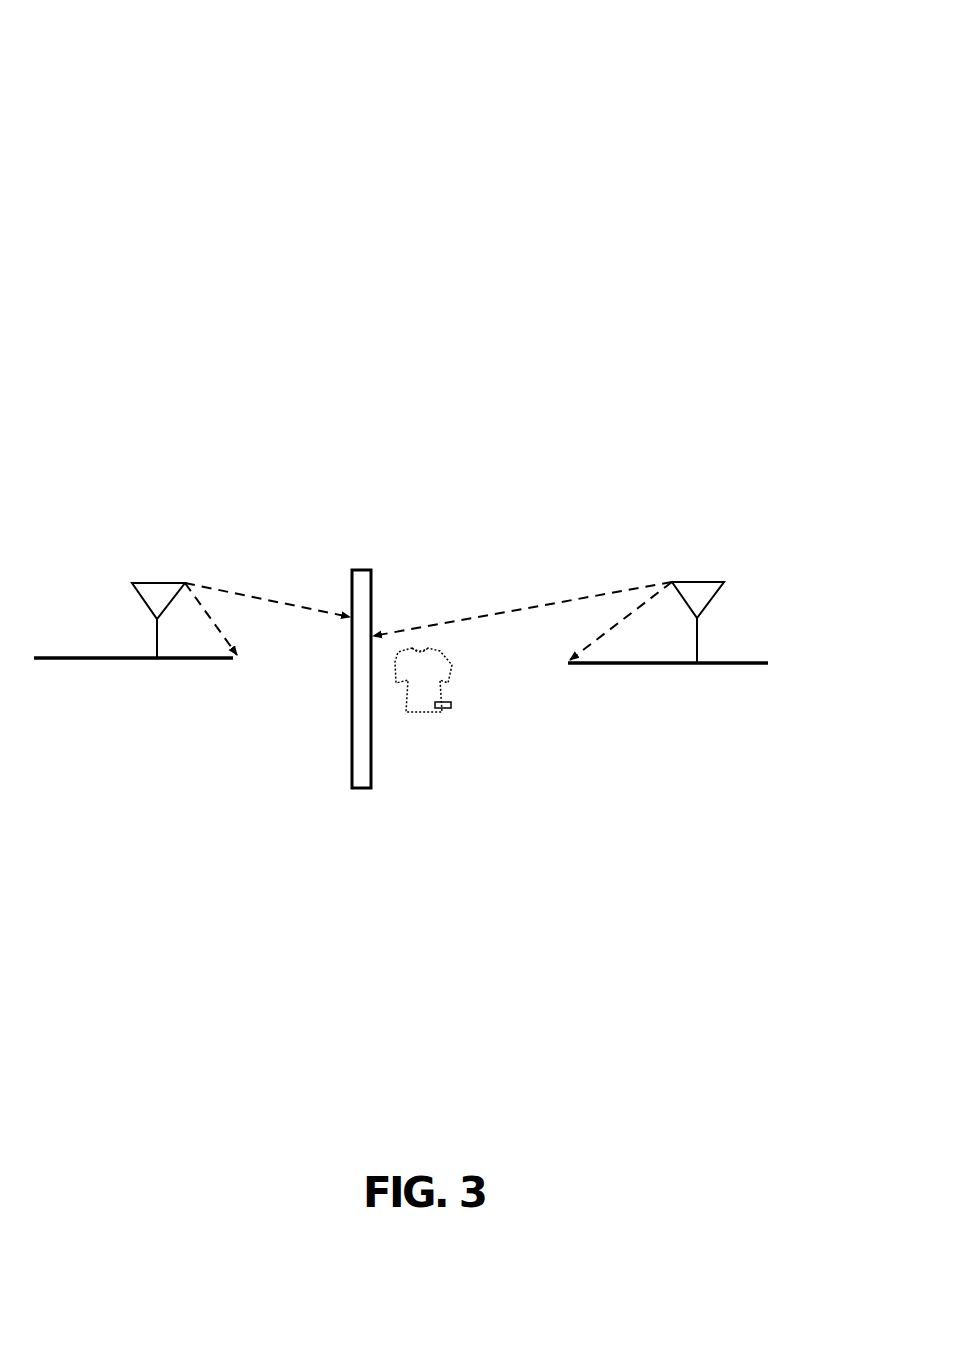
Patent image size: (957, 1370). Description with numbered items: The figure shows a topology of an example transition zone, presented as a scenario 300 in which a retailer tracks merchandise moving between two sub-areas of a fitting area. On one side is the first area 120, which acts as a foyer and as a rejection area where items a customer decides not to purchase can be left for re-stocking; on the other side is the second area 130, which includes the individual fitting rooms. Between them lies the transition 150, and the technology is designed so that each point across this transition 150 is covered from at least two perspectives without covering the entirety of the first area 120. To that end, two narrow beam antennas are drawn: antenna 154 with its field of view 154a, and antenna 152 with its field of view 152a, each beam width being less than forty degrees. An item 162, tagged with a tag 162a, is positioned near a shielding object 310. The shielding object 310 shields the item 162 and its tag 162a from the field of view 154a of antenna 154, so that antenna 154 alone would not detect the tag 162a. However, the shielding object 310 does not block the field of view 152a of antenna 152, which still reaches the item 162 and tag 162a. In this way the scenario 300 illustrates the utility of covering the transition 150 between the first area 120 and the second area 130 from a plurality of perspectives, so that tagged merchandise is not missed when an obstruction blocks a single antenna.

The scenario 300 is at (90, 80).
The Area_1 120 is at (527, 120).
The Area_2 130 is at (457, 915).
The transition 150 is at (453, 579).
The antenna 152 is at (718, 575).
The field of view 152a is at (521, 609).
The antenna 154 is at (163, 567).
The field of view 154a is at (328, 602).
The item 162 is at (452, 657).
The tag 162a is at (452, 704).
The shielding object 310 is at (342, 722).